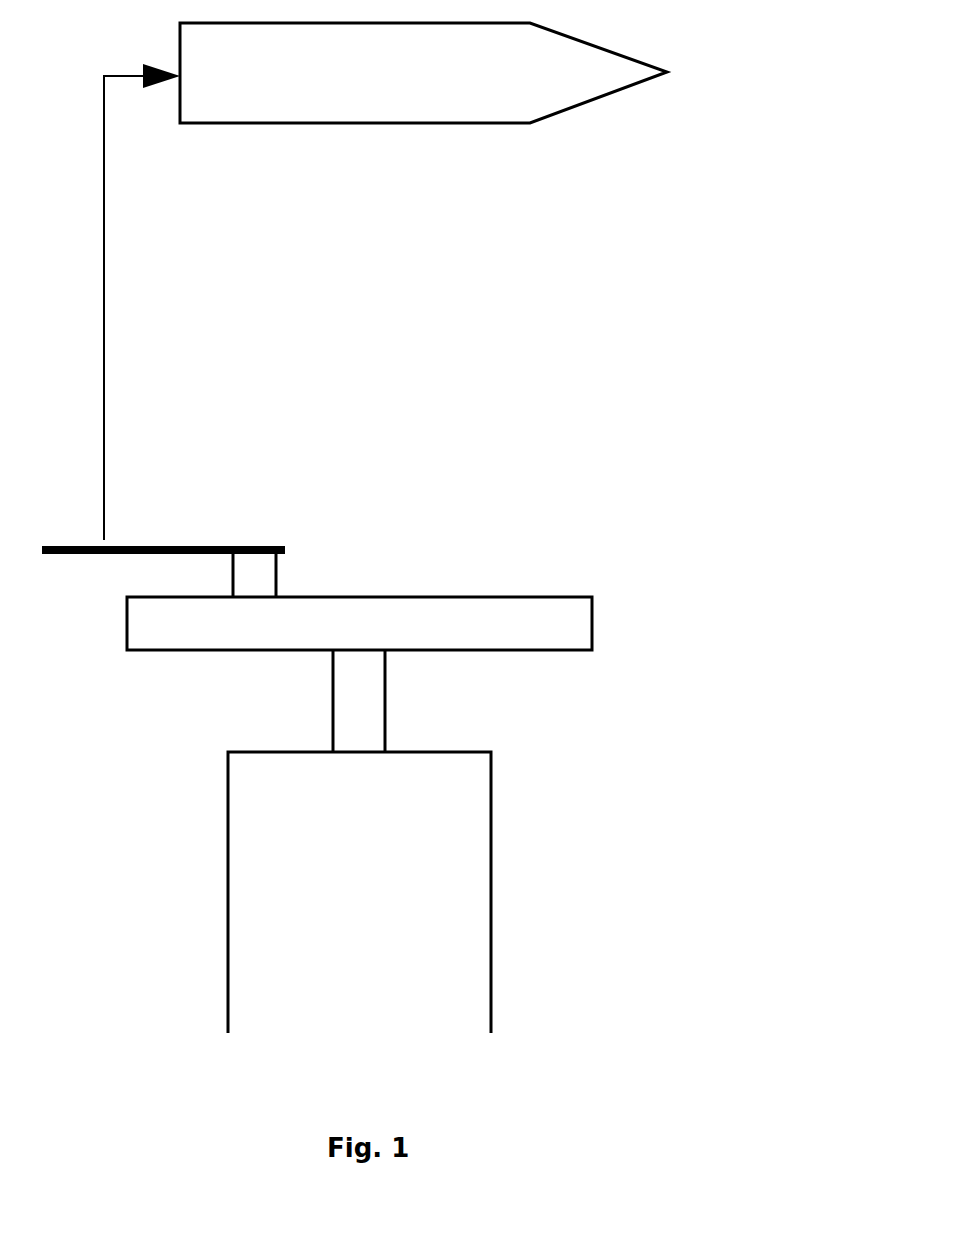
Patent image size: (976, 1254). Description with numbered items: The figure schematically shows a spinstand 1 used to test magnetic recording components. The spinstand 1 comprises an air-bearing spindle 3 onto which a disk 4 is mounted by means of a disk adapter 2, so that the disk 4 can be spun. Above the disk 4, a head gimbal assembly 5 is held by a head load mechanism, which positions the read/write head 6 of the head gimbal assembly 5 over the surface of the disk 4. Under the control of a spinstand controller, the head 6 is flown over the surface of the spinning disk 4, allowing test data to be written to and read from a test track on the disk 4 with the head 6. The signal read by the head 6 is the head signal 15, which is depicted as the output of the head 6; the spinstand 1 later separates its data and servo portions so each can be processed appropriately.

The spinstand 1 is at (736, 200).
The disk adapter 2 is at (367, 731).
The air-bearing spindle 3 is at (463, 910).
The disk 4 is at (570, 627).
The head gimbal assembly 5 is at (194, 505).
The read/write head 6 is at (265, 573).
The head signal 15 is at (385, 281).